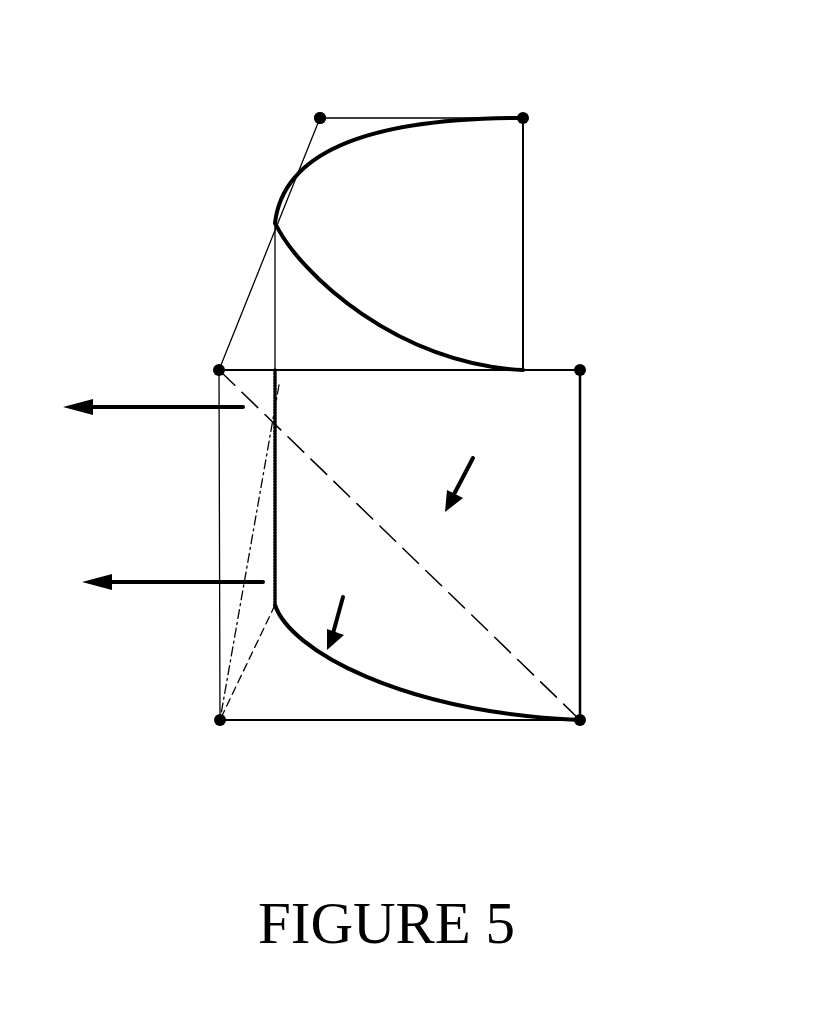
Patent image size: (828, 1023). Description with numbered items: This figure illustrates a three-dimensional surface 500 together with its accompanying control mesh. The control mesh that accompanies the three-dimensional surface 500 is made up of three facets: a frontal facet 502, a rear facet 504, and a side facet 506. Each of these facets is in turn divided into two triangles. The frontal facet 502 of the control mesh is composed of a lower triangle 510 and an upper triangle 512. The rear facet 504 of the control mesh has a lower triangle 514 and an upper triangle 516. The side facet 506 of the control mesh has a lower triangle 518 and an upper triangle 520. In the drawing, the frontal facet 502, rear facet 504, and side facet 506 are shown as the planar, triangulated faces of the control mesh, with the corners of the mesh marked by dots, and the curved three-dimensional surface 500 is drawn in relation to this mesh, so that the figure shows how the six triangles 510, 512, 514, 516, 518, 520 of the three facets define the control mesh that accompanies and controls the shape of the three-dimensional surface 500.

The three-dimensional surface 500 is at (438, 257).
The frontal facet 502 is at (580, 657).
The rear facet 504 is at (420, 116).
The side facet 506 is at (248, 300).
The lower triangle 510 is at (462, 665).
The upper triangle 512 is at (502, 508).
The lower triangle 514 is at (320, 118).
The upper triangle 516 is at (337, 138).
The lower triangle 518 is at (252, 625).
The upper triangle 520 is at (245, 462).